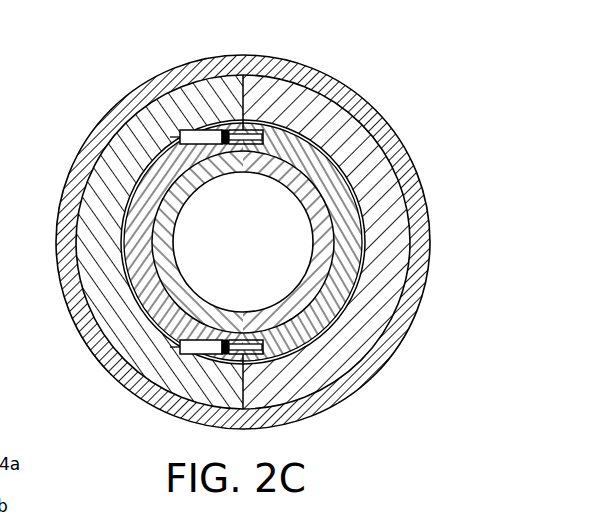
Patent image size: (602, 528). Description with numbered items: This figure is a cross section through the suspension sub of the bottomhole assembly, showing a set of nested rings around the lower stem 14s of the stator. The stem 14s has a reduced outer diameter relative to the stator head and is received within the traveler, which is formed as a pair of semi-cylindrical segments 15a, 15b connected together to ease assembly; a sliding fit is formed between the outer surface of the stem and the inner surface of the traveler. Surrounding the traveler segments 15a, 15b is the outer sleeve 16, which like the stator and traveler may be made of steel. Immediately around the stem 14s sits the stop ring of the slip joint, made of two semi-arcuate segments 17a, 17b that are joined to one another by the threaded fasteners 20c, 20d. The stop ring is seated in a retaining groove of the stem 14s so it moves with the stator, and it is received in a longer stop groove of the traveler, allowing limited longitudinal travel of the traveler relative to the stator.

The outer sleeve 16 is at (133, 95).
The semi-cylindrical segment 15a is at (120, 172).
The semi-cylindrical segment 15b is at (325, 117).
The semi-arcuate segment 17a is at (127, 232).
The semi-arcuate segment 17b is at (330, 180).
The lower stem 14s is at (174, 243).
The threaded fastener 20c is at (237, 144).
The threaded fastener 20d is at (236, 340).